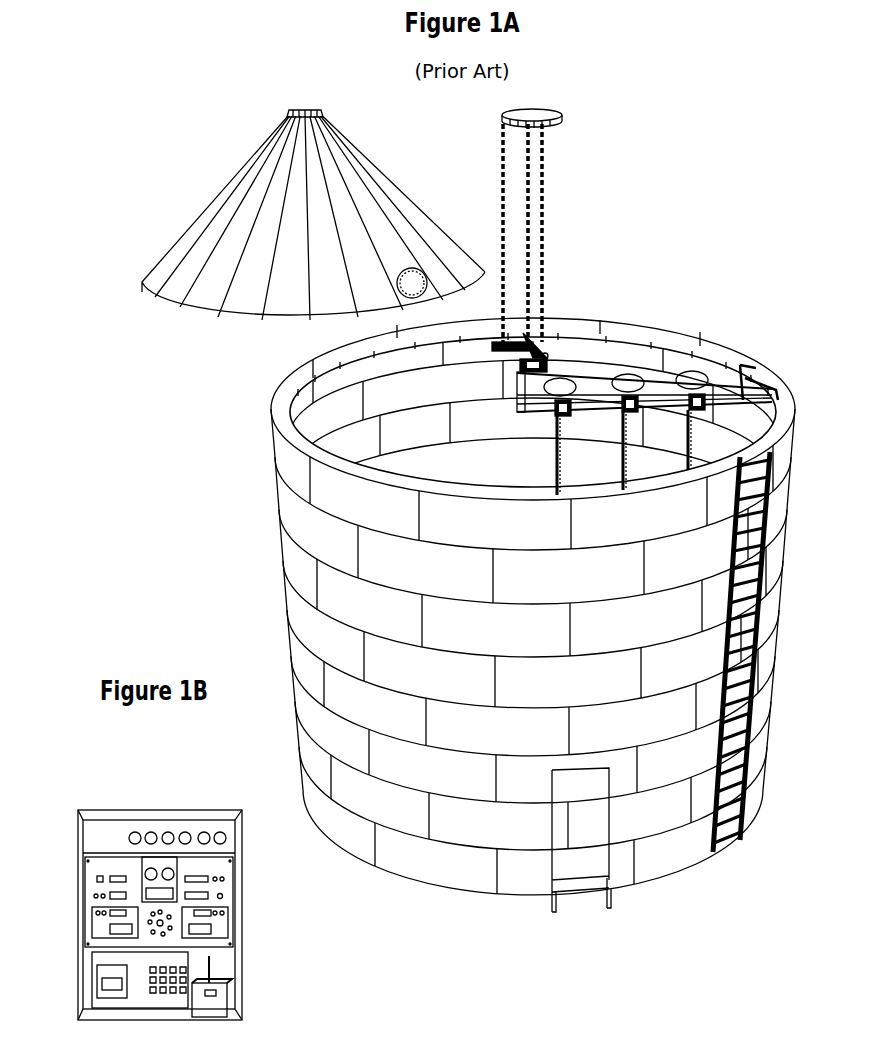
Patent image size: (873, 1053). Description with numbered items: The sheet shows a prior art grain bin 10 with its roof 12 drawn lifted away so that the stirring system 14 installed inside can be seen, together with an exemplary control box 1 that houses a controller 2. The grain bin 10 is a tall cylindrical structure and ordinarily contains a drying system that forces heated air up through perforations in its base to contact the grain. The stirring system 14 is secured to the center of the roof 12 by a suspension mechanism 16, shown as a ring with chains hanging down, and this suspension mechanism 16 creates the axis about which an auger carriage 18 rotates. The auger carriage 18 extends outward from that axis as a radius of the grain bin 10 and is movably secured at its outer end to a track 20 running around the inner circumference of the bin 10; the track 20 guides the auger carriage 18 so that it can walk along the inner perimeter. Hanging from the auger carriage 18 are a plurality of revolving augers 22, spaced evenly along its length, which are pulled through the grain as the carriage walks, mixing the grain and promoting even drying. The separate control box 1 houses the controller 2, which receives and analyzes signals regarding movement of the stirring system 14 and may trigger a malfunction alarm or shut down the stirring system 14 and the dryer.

In FIG. 1A, the grain bin 10 is at (313, 228).
In FIG. 1A, the roof 12 is at (213, 276).
In FIG. 1A, the stirring system 14 is at (673, 392).
In FIG. 1A, the suspension mechanism 16 is at (563, 115).
In FIG. 1A, the auger carriage 18 is at (773, 388).
In FIG. 1A, the track 20 is at (687, 350).
In FIG. 1A, the revolving augers 22 is at (557, 495).
In FIG. 1B, the control box 1 is at (171, 871).
In FIG. 1B, the controller 2 is at (231, 885).